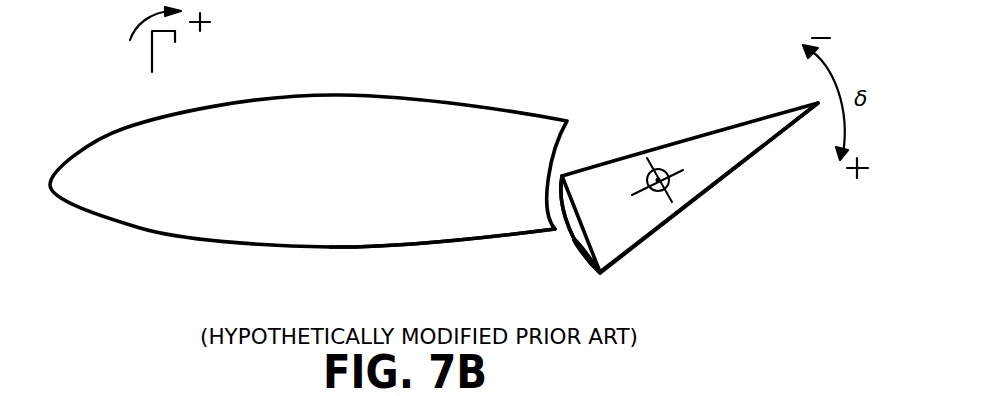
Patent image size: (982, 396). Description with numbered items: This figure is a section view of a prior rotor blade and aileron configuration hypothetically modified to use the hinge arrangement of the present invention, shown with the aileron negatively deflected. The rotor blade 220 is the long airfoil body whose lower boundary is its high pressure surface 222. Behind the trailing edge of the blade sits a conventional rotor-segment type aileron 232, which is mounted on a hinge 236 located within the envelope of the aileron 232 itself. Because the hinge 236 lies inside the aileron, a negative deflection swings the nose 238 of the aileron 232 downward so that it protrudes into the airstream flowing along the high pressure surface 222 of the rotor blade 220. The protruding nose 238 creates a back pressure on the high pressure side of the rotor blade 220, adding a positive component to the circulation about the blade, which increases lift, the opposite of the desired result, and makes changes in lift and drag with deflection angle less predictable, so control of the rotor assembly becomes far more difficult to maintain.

The rotor blade 220 is at (395, 85).
The high pressure surface 222 is at (458, 245).
The aileron 232 is at (748, 139).
The hinge 236 is at (670, 180).
The nose 238 is at (576, 261).